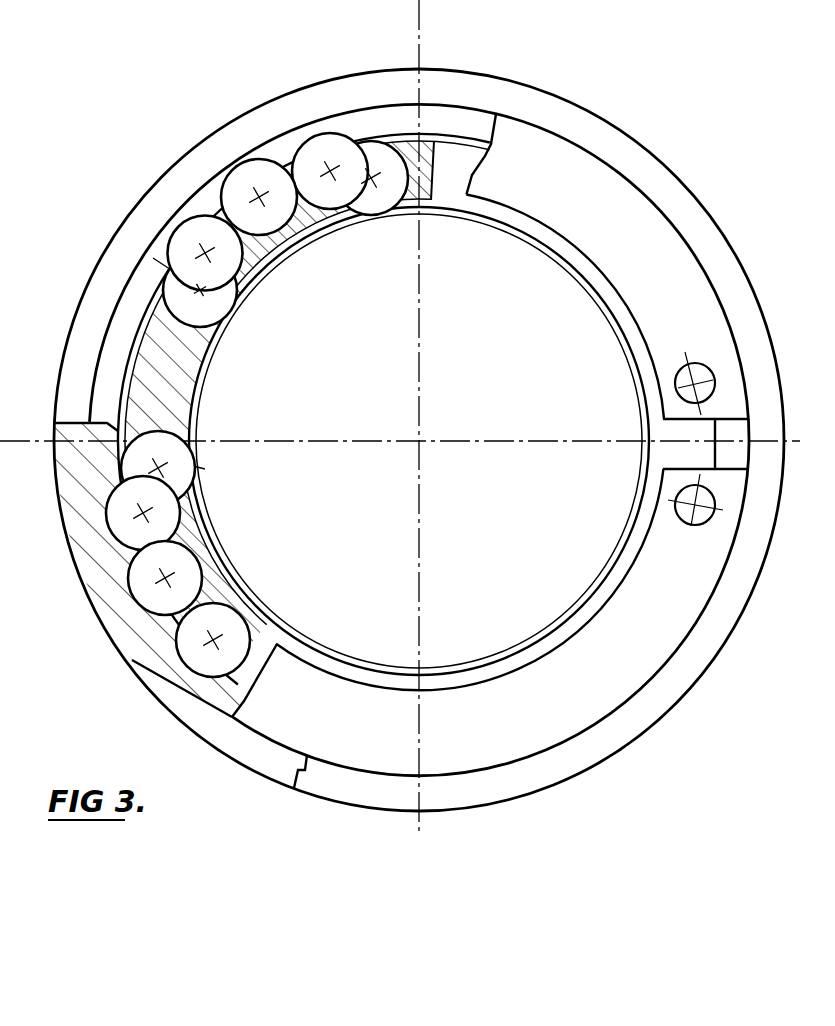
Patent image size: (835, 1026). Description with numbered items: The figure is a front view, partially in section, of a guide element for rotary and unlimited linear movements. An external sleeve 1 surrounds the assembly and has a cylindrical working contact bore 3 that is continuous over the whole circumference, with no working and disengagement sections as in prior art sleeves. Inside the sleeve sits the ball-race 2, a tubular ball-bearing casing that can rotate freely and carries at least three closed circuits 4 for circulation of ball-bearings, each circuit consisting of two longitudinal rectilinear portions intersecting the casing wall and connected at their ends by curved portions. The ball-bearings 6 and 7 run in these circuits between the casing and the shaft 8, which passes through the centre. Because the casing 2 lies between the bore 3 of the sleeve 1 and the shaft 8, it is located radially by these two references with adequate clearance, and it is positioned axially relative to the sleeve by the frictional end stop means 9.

The external sleeve 1 is at (213, 152).
The ball-race 2 is at (162, 357).
The cylindrical bore 3 is at (447, 130).
The closed circuits 4 is at (233, 613).
The ball-bearings 6 is at (121, 523).
The ball-bearings 7 is at (306, 150).
The shaft 8 is at (551, 535).
The means for axially retaining the casing 9 is at (631, 242).